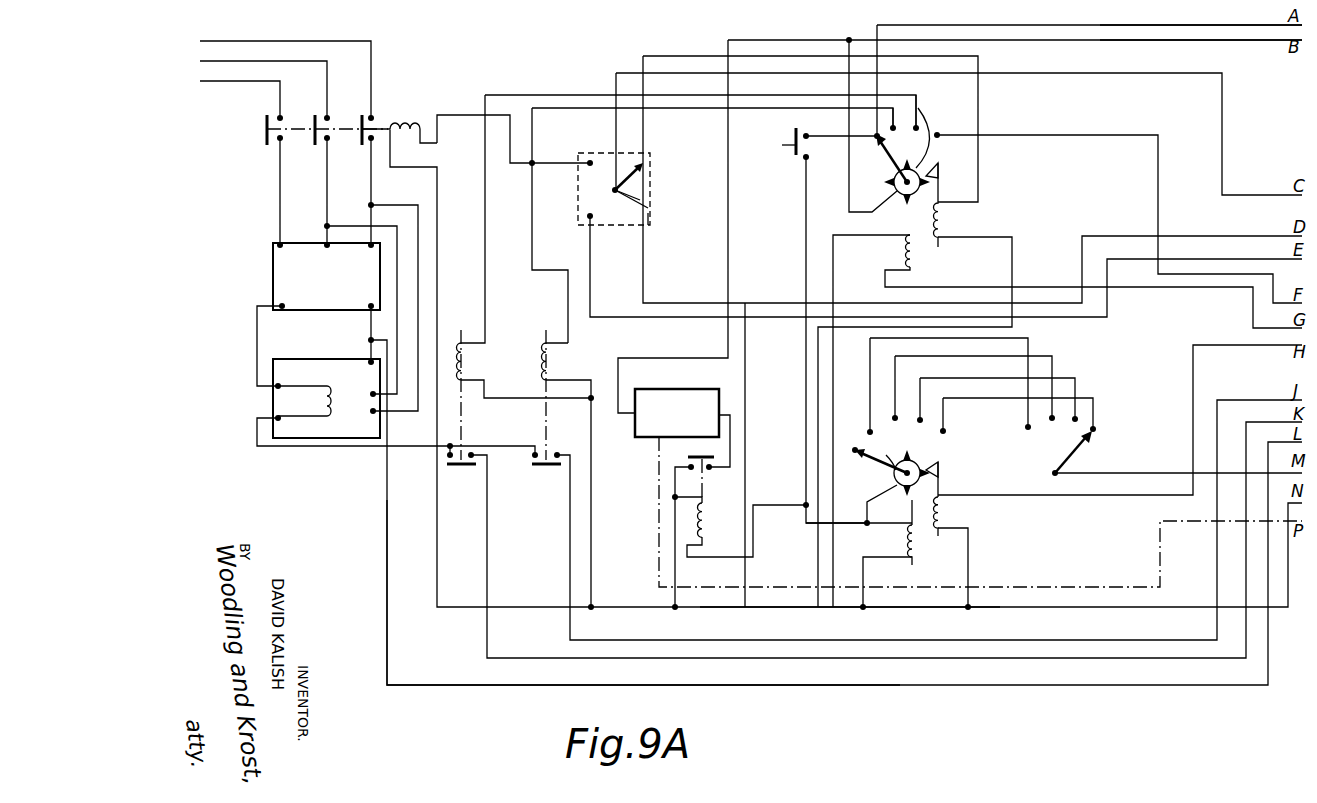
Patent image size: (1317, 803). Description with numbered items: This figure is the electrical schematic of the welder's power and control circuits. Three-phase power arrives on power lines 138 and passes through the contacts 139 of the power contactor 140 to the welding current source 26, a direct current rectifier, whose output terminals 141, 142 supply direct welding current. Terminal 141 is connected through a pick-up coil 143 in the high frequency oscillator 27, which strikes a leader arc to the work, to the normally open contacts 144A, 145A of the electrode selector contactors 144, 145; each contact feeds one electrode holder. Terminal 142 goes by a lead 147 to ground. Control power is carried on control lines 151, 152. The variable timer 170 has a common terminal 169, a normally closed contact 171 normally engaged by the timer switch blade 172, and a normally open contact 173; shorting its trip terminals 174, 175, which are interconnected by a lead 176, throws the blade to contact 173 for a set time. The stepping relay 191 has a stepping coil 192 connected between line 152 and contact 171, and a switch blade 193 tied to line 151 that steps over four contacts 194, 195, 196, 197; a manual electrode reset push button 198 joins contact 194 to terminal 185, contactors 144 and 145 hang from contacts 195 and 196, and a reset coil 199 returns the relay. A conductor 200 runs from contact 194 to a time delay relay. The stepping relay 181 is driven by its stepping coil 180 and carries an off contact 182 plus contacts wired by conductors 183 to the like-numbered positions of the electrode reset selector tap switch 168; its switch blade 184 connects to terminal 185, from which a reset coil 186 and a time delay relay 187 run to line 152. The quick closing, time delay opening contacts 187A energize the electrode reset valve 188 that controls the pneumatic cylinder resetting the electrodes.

The welding current source 26 is at (273, 270).
The high frequency oscillator 27 is at (273, 397).
The power lines 138 is at (200, 81).
The contacts 139 is at (267, 128).
The power contactor 140 is at (392, 112).
The output terminal 141 is at (283, 310).
The output terminal 142 is at (371, 308).
The pick-up coil 143 is at (329, 402).
The electrode selector contactor 144 is at (542, 351).
The normally open contacts 144A is at (554, 467).
The electrode selector contactor 145 is at (464, 355).
The normally open contacts 145A is at (466, 467).
The lead 147 is at (388, 503).
The control line 151 is at (1118, 41).
The control line 152 is at (775, 609).
The electrode reset selector tap switch 168 is at (1070, 458).
The common terminal 169 is at (612, 190).
The timer 170 is at (648, 185).
The normally closed contact 171 is at (645, 165).
The timer switch blade 172 is at (650, 208).
The normally open contact 173 is at (578, 150).
The trip terminal 174 is at (585, 226).
The trip terminal 175 is at (647, 216).
The lead 176 is at (745, 302).
The stepping coil 180 is at (943, 508).
The stepping relay 181 is at (894, 482).
The off contact 182 is at (860, 437).
The conductors 183 is at (990, 378).
The switch blade 184 is at (882, 458).
The terminal 185 is at (867, 526).
The reset coil 186 is at (916, 548).
The time delay relay 187 is at (707, 503).
The normally open contacts 187A is at (711, 455).
The electrode reset valve 188 is at (644, 440).
The stepping relay 191 is at (936, 128).
The stepping coil 192 is at (942, 219).
The switch blade 193 is at (895, 175).
The contact 194 is at (886, 150).
The contact 195 is at (899, 124).
The contact 196 is at (916, 132).
The contact 197 is at (938, 132).
The manual electrode reset push button 198 is at (795, 154).
The reset coil 199 is at (905, 250).
The conductor 200 is at (1145, 25).